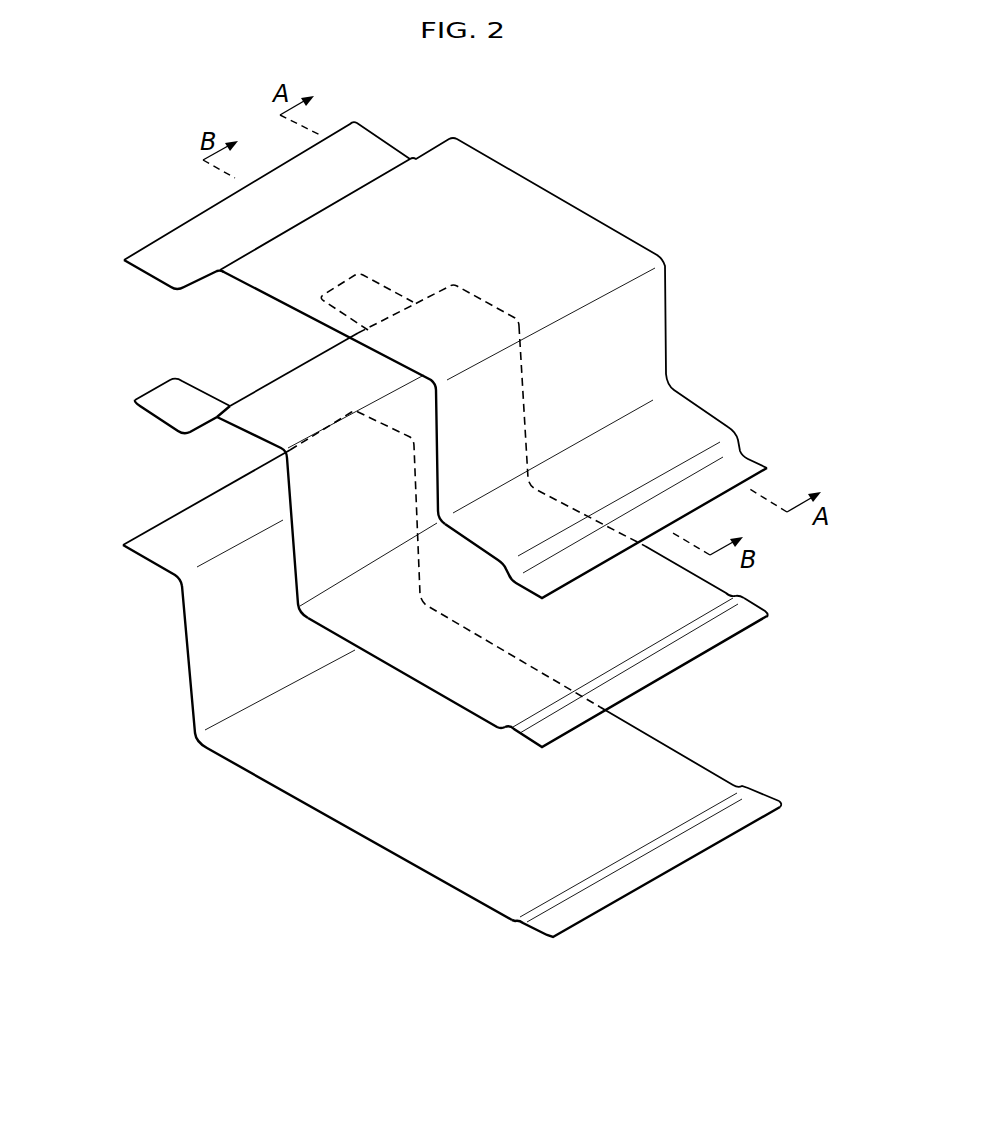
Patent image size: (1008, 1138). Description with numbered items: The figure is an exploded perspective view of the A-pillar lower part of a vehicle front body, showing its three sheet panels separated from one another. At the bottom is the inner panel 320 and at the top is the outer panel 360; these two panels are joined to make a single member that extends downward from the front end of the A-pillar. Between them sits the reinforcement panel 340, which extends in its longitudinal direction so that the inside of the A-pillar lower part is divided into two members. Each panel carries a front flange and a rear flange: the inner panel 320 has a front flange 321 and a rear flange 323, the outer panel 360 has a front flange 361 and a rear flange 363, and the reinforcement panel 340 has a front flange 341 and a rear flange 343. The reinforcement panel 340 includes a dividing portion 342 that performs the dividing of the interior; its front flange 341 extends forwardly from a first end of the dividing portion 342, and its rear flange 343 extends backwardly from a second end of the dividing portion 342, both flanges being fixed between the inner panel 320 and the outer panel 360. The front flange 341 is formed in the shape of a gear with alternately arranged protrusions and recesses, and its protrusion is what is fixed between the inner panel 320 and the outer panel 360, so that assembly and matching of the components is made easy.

The inner panel 320 is at (407, 692).
The front flange 321 is at (178, 530).
The rear flange 323 is at (643, 870).
The reinforcement panel 340 is at (457, 510).
The front flange 341 is at (170, 395).
The dividing portion 342 is at (300, 540).
The rear flange 343 is at (693, 643).
The outer panel 360 is at (477, 356).
The front flange 361 is at (207, 225).
The rear flange 363 is at (753, 460).